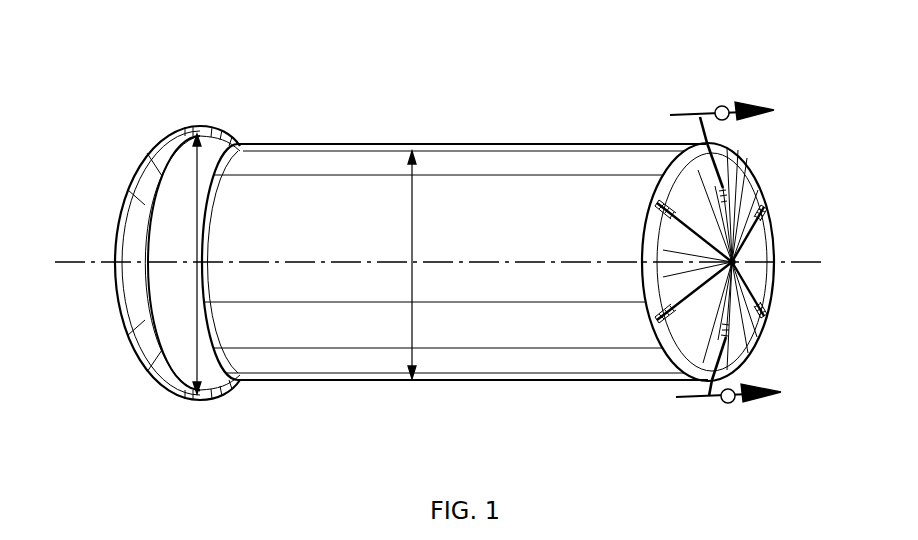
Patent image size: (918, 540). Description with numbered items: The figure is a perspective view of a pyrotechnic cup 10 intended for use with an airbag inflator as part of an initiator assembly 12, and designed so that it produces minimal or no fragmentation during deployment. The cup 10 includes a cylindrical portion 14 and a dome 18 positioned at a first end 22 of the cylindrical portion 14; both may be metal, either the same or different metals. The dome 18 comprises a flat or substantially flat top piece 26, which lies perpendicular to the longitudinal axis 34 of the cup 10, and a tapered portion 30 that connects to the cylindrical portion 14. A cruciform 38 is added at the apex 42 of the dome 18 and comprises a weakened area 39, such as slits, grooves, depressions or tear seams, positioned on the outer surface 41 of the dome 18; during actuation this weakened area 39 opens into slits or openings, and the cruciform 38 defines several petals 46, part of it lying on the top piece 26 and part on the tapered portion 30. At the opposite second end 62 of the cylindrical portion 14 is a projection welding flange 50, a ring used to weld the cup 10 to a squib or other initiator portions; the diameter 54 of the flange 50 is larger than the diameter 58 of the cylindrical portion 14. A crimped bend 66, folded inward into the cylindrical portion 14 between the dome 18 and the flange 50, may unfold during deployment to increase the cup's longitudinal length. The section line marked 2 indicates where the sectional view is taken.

The pyrotechnic cup 10 is at (442, 236).
The initiator assembly 12 is at (188, 170).
The cylindrical portion 14 is at (493, 360).
The dome 18 is at (772, 161).
The first end 22 is at (626, 130).
The top piece 26 is at (750, 323).
The tapered portion 30 is at (677, 357).
The longitudinal axis 34 is at (80, 264).
The cruciform 38 is at (762, 222).
The weakened area 39 is at (655, 315).
The outer surface 41 is at (738, 168).
The apex 42 is at (745, 262).
The petals 46 is at (684, 208).
The projection welding flange 50 is at (178, 396).
The diameter of the projection welding flange 54 is at (200, 243).
The diameter of the cylindrical portion 58 is at (412, 242).
The second end 62 is at (212, 110).
The crimped bend 66 is at (236, 382).
The section line 2- 2 is at (725, 260).